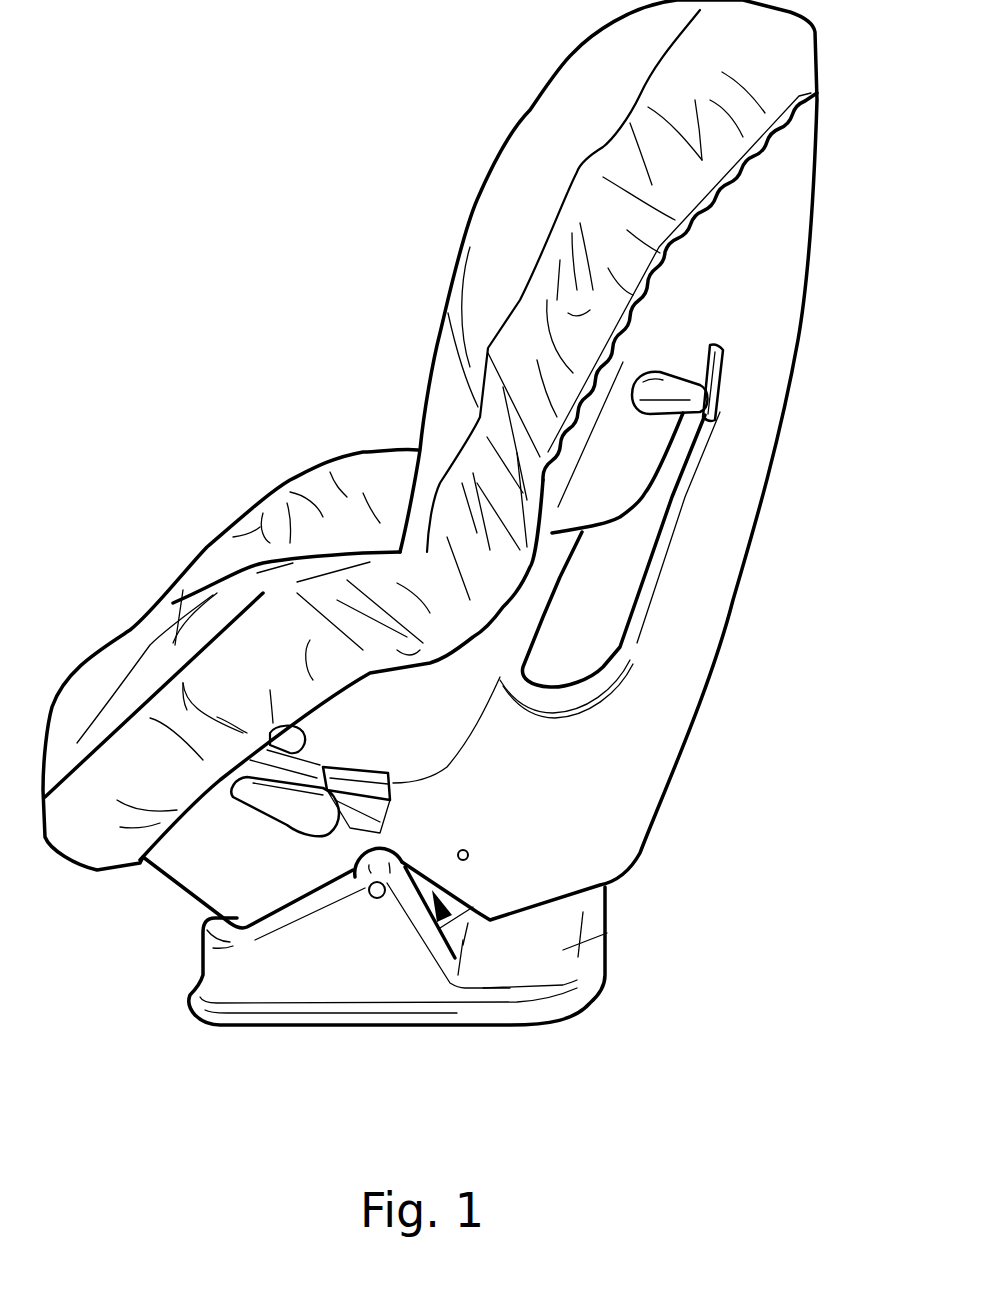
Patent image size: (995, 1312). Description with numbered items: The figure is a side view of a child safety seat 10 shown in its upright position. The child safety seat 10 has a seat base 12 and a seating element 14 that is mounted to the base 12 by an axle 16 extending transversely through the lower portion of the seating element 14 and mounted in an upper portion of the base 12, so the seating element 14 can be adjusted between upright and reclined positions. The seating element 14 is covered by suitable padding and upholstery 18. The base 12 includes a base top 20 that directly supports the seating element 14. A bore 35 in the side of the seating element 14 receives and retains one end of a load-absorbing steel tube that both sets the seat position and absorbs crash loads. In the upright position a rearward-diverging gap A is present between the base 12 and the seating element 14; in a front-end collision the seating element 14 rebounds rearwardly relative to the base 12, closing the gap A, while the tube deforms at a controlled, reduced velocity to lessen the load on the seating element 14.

The child safety seat 10 is at (328, 242).
The seat base 12 is at (590, 1027).
The seating element 14 is at (760, 373).
The axle 16 is at (377, 900).
The padding and upholstery 18 is at (527, 150).
The base top 20 is at (590, 943).
The bore 35 is at (470, 855).
The gap A is at (447, 925).